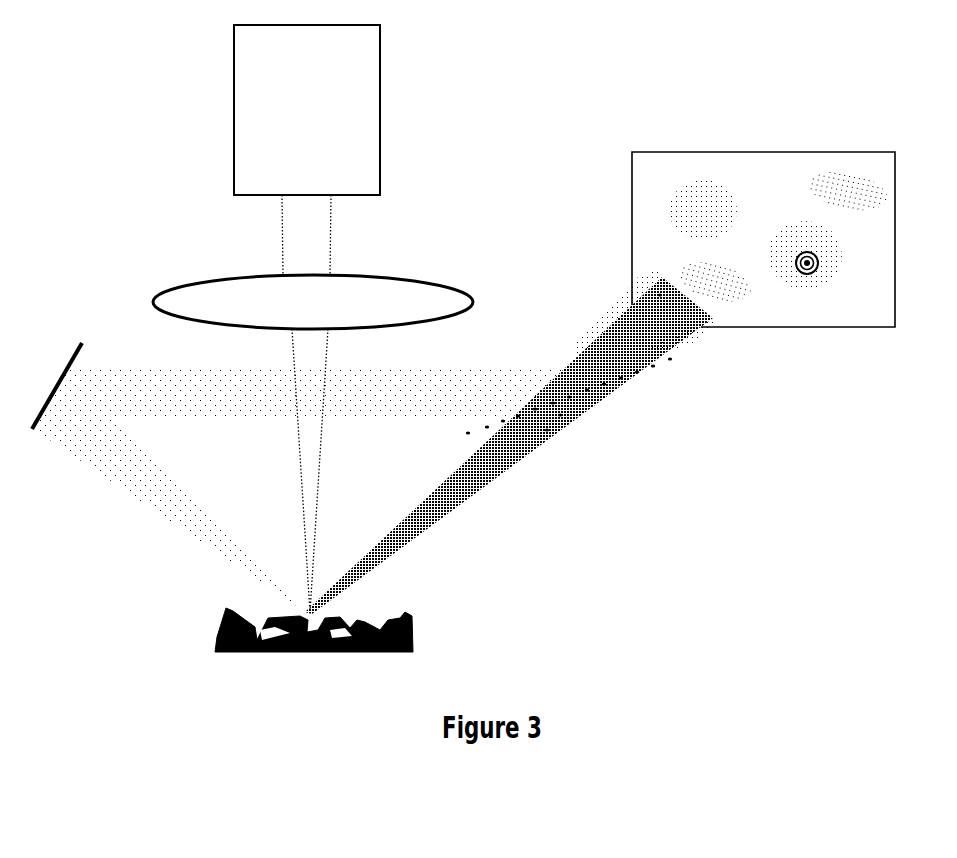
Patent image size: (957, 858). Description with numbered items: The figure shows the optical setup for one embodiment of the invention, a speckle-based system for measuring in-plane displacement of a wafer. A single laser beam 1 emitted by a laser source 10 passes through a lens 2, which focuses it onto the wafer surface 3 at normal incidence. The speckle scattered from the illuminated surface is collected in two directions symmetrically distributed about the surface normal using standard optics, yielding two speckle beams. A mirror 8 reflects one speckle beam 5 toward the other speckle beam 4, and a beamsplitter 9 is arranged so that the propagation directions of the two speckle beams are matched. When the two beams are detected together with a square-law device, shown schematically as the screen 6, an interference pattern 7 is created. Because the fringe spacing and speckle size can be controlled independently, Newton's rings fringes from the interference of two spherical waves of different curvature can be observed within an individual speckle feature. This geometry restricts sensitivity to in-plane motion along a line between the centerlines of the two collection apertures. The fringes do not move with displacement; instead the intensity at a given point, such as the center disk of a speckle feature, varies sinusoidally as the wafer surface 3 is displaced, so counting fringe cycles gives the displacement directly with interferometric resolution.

The laser source 10 is at (230, 99).
The laser beam 1 is at (333, 237).
The lens 2 is at (463, 296).
The wafer surface 3 is at (415, 618).
The speckle beam 4 is at (505, 473).
The speckle beam 5 is at (137, 486).
The screen 6 is at (813, 329).
The interference pattern 7 is at (820, 258).
The mirror 8 is at (68, 352).
The beamsplitter 9 is at (624, 379).